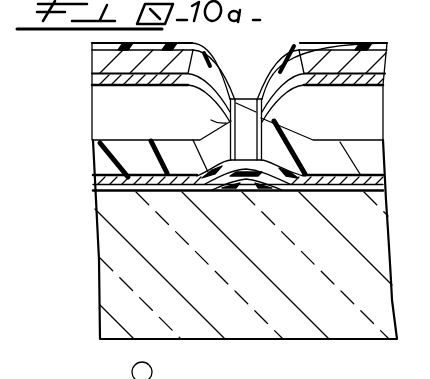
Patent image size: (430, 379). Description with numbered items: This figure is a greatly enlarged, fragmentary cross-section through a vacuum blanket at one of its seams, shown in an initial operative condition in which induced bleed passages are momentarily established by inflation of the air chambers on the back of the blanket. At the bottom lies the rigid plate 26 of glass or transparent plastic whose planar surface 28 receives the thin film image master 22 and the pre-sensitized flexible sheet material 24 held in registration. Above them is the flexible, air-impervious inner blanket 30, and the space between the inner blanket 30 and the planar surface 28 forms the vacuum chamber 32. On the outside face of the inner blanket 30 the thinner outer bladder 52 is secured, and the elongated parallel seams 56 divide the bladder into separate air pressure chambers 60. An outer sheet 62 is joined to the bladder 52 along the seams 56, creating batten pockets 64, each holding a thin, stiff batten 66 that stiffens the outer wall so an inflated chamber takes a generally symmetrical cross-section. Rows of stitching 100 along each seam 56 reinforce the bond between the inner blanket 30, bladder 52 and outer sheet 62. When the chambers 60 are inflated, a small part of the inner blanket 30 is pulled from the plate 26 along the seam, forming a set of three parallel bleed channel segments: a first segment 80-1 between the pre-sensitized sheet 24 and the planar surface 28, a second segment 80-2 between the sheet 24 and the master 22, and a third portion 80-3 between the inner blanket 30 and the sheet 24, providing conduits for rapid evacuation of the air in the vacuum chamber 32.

The film image master 22 is at (98, 186).
The pre-sensitized flexible sheet material 24 is at (97, 176).
The rigid plate 26 is at (322, 310).
The planar surface 28 is at (100, 161).
The inner blanket 30 is at (97, 150).
The vacuum chamber 32 is at (265, 205).
The outer bladder 52 is at (97, 78).
The parallel seams 56 is at (246, 99).
The air pressure chambers 60 is at (132, 126).
The outer sheet 62 is at (327, 44).
The batten pockets 64 is at (215, 63).
The batten 66 is at (97, 58).
The first segment of bleed channel 80-1 is at (245, 190).
The second segment of bleed channel 80-2 is at (233, 188).
The third portion of bleed channel 80-3 is at (213, 187).
The rows of stitching 100 is at (211, 120).